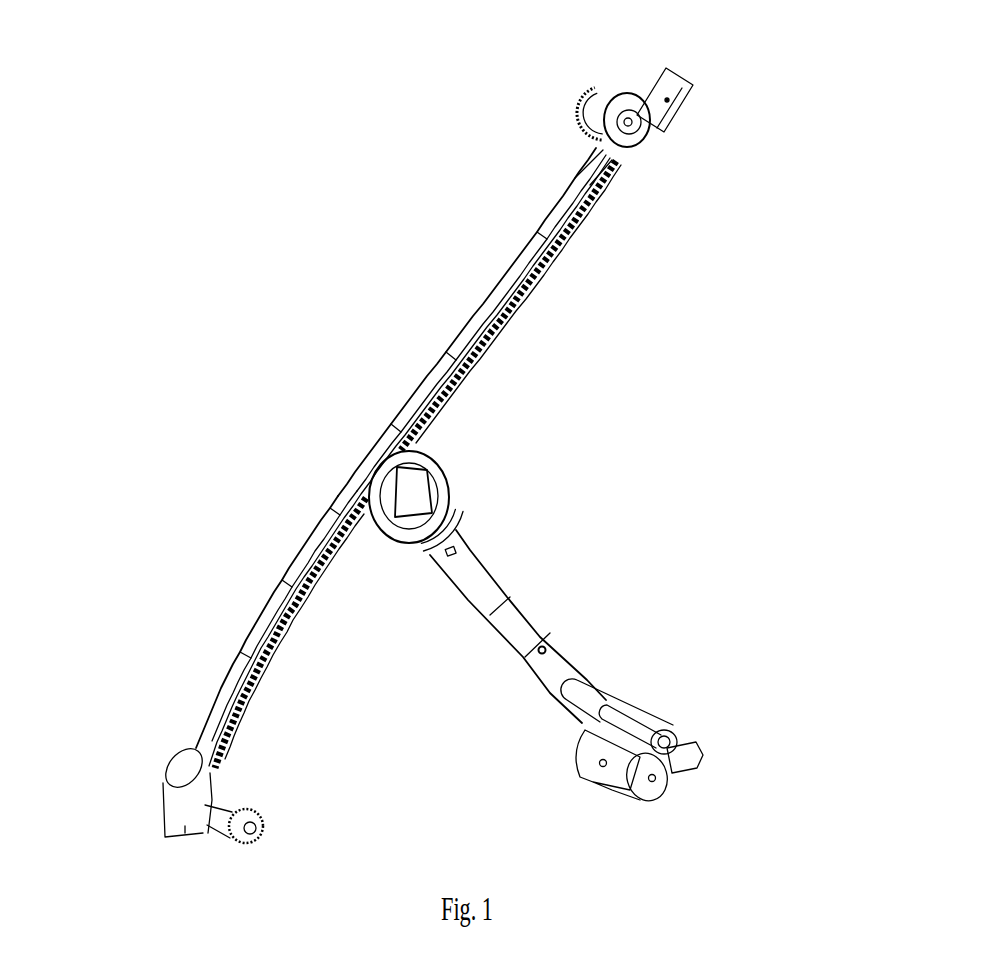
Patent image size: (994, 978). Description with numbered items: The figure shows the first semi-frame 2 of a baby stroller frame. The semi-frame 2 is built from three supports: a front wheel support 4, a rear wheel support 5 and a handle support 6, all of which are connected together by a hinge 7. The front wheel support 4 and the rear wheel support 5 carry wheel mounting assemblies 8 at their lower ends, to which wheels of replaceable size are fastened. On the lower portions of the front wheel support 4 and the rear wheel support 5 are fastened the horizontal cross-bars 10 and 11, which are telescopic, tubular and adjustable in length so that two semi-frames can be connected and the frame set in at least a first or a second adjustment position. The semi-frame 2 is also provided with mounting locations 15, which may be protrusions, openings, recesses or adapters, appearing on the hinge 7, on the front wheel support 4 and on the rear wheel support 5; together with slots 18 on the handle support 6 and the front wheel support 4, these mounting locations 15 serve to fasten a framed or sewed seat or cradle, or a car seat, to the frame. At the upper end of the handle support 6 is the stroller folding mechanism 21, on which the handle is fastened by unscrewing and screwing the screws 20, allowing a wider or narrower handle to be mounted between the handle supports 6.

The semi-frame 2 is at (508, 160).
The front wheel support 4 is at (282, 592).
The rear wheel support 5 is at (548, 670).
The handle support 6 is at (435, 380).
The hinge 7 is at (368, 466).
The wheel mounting assembly 8 is at (183, 800).
The horizontal cross-bar 10 is at (212, 820).
The horizontal cross-bar 11 is at (628, 725).
The mounting locations 15 is at (460, 530).
The slots 18 is at (527, 293).
The screws 20 is at (690, 95).
The stroller folding mechanism 21 is at (638, 138).